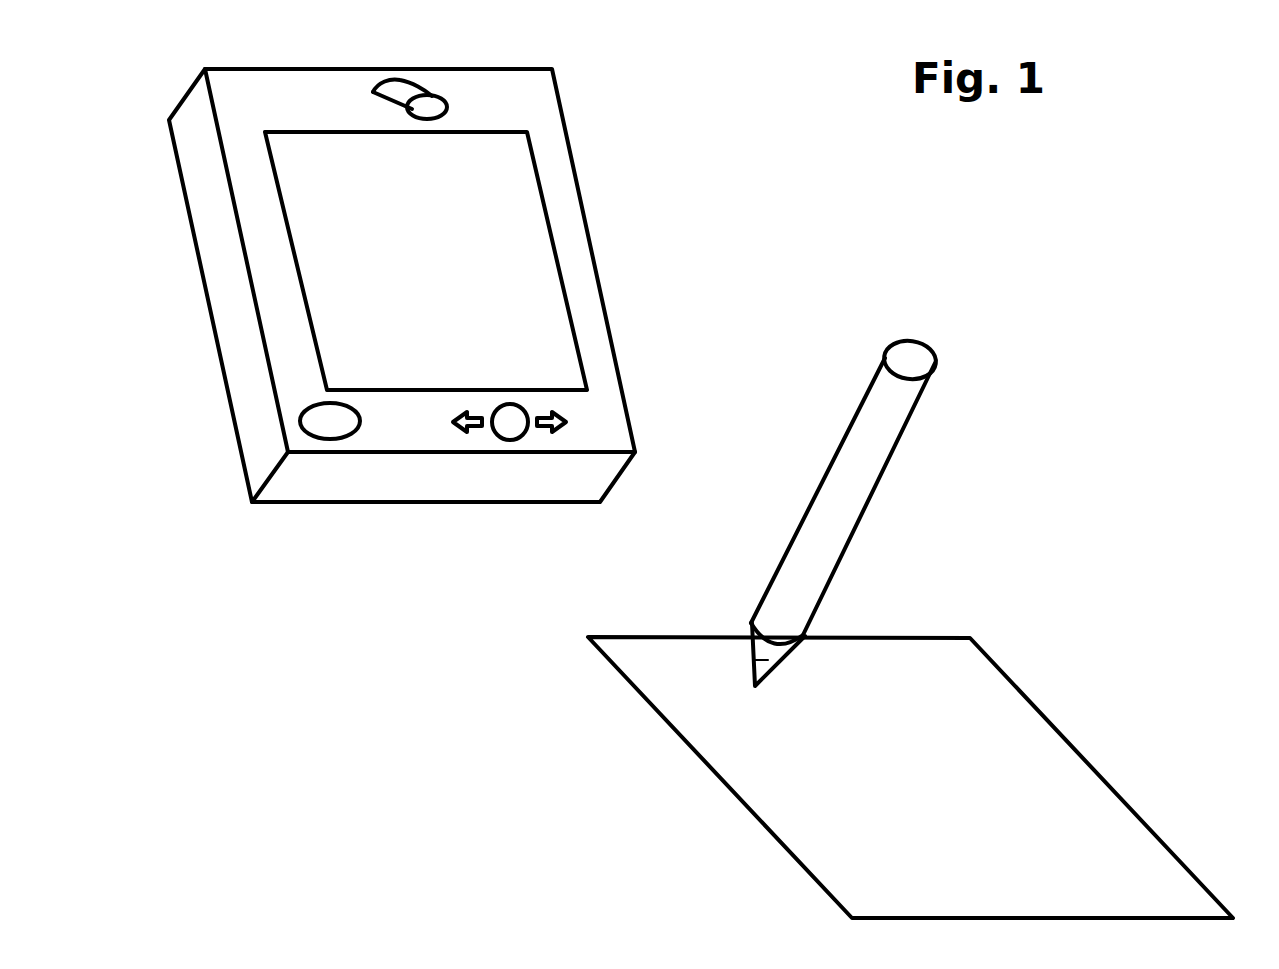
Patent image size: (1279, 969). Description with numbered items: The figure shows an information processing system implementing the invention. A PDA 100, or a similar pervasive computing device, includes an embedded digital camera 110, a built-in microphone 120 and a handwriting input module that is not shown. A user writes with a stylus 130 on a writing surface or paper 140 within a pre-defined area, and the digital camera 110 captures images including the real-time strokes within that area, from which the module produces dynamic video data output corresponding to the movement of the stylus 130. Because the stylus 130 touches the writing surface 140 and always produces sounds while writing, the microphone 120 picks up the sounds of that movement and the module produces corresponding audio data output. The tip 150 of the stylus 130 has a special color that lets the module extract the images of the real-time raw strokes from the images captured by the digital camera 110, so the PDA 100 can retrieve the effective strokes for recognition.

The PDA 100 is at (623, 221).
The digital camera 110 is at (455, 87).
The microphone 120 is at (303, 454).
The stylus 130 is at (924, 450).
The writing surface 140 is at (1079, 706).
The tip 150 is at (740, 681).